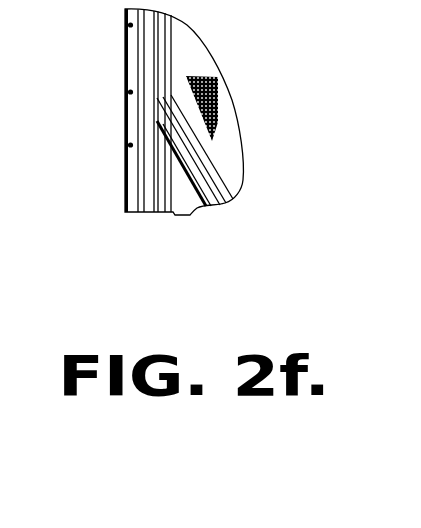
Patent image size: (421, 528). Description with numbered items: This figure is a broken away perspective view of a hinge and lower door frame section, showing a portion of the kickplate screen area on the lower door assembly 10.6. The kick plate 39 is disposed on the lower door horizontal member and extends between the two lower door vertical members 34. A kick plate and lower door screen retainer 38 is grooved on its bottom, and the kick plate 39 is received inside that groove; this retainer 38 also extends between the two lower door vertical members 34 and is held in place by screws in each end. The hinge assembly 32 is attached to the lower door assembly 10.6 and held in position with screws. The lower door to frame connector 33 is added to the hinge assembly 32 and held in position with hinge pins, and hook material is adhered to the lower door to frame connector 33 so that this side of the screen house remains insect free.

The lower door assembly 10.6 is at (205, 59).
The hinge assembly 32 is at (130, 97).
The lower door to frame connector 33 is at (132, 60).
The lower door vertical member 34 is at (152, 185).
The kick plate and lower door screen retainer 38 is at (192, 175).
The kick plate 39 is at (184, 210).